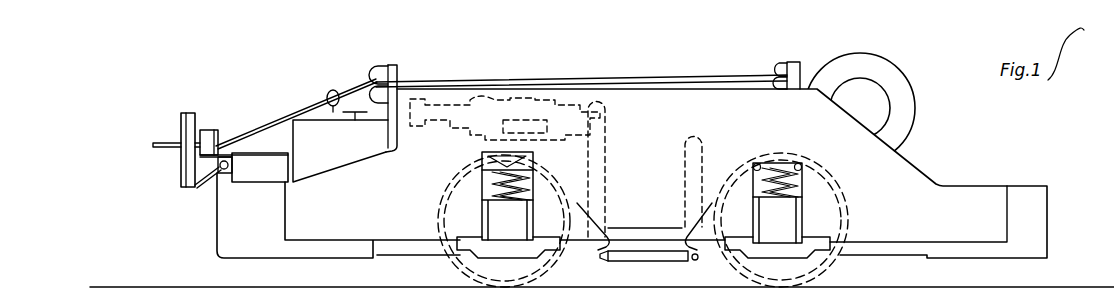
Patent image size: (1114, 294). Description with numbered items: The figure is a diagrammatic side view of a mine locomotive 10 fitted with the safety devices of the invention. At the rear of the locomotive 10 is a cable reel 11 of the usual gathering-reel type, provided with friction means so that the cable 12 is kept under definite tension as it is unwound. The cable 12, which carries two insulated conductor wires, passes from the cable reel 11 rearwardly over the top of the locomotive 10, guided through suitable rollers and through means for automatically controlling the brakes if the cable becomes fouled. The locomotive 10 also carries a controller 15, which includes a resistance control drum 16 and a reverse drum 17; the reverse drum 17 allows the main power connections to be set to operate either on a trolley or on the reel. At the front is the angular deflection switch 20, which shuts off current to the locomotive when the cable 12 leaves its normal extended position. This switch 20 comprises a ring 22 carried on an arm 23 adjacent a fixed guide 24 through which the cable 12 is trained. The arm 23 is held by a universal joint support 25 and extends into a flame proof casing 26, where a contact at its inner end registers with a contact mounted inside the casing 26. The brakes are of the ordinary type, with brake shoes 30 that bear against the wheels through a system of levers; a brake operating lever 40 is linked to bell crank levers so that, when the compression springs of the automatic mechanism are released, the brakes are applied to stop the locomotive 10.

The locomotive 10 is at (931, 172).
The cable reel 11 is at (890, 62).
The cable 12 is at (579, 77).
The controller 15 is at (289, 137).
The resistance control drum 16 is at (325, 100).
The reverse drum 17 is at (366, 97).
The switch 20 is at (179, 165).
The ring 22 is at (182, 128).
The arm 23 is at (208, 183).
The fixed guide 24 is at (210, 130).
The universal joint support 25 is at (233, 173).
The flame proof casing 26 is at (265, 177).
The brake shoes 30 is at (608, 228).
The brake operating lever 40 is at (608, 165).